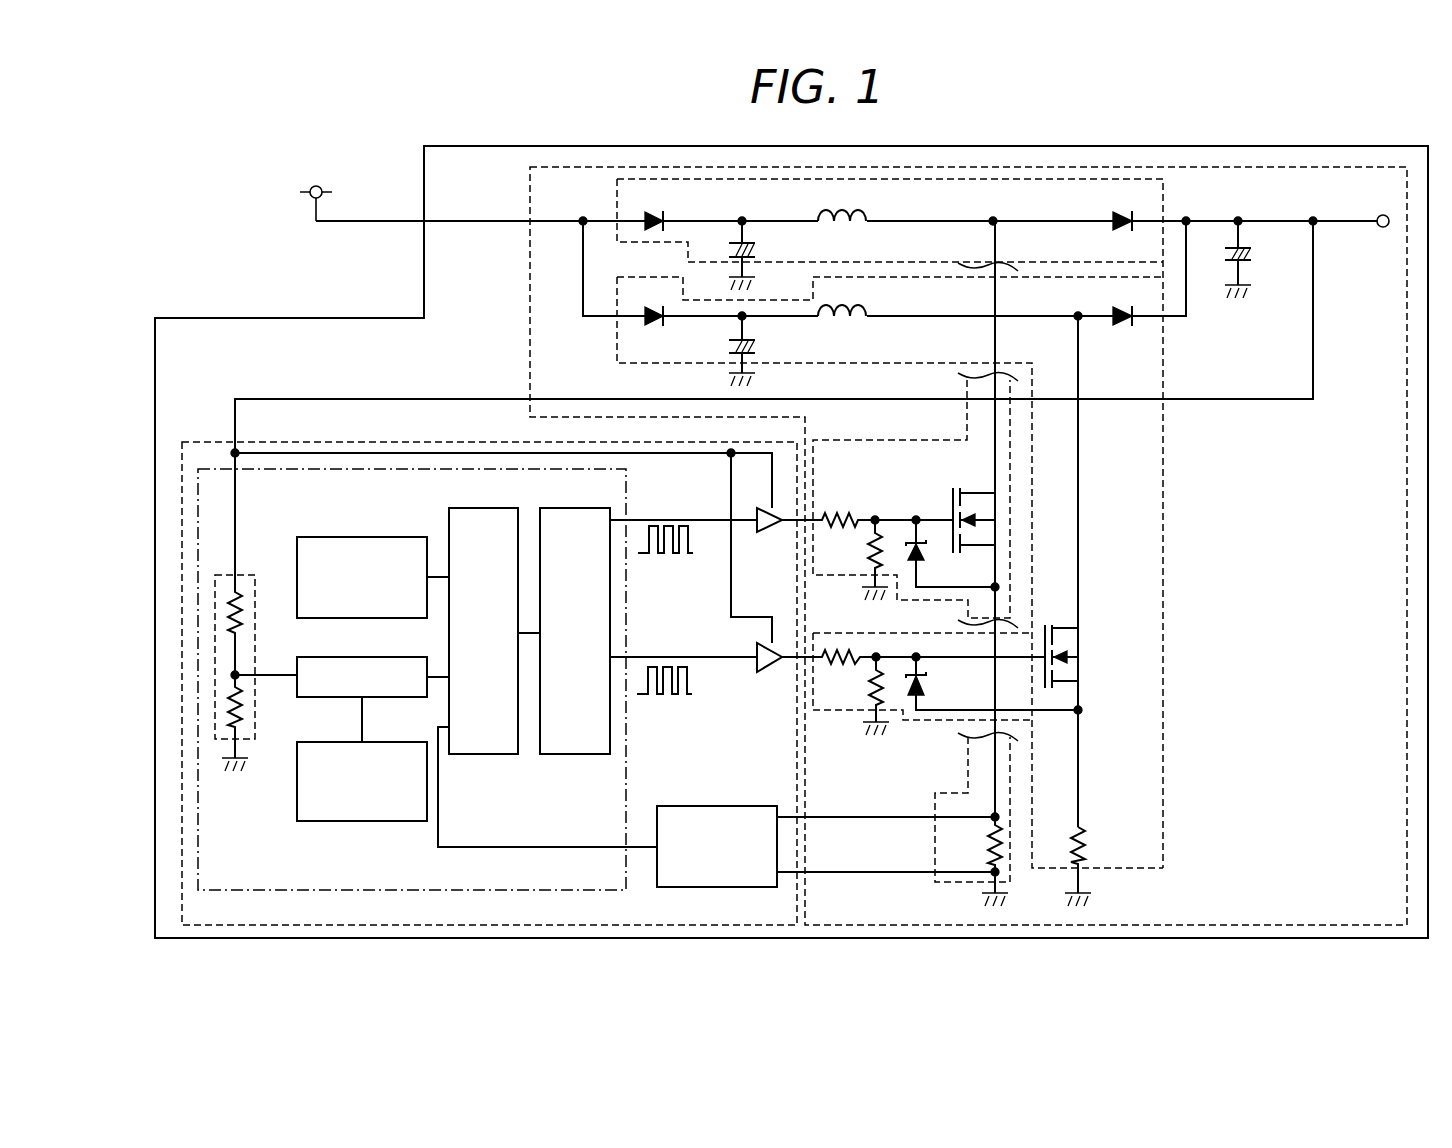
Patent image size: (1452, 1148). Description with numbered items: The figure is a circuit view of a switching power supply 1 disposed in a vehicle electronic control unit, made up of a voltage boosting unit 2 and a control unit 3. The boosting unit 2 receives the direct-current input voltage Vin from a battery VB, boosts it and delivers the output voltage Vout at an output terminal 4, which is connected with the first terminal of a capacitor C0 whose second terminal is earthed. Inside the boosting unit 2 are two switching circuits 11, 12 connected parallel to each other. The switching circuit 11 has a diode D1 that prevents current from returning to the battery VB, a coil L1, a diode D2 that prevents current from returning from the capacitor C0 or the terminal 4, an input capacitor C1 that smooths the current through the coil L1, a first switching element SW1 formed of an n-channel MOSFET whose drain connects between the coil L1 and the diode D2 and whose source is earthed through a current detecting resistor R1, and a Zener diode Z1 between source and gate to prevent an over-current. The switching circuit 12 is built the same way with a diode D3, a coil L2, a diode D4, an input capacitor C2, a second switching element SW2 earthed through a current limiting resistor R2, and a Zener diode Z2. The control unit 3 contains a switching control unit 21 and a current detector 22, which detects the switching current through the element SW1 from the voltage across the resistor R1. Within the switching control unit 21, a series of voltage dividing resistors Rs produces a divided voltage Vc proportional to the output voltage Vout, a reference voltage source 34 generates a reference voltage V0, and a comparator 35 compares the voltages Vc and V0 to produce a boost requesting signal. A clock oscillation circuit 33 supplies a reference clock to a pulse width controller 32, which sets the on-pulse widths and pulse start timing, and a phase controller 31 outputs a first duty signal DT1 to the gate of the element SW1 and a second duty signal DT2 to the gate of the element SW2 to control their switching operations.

The switching power supply 1 is at (1200, 143).
The voltage boosting unit 2 is at (528, 311).
The control unit 3 is at (210, 440).
The output terminal 4 is at (1378, 214).
The switching circuit 11 is at (879, 438).
The switching circuit 12 is at (1168, 636).
The switching control unit 21 is at (630, 775).
The current detector 22 is at (750, 806).
The phase controller 31 is at (580, 755).
The pulse width controller 32 is at (485, 755).
The clock oscillation circuit 33 is at (381, 537).
The reference voltage source 34 is at (322, 822).
The comparator 35 is at (348, 657).
The diode D1 is at (668, 212).
The diode D2 is at (1118, 208).
The diode D3 is at (665, 326).
The diode D4 is at (1118, 307).
The capacitor C0 is at (1252, 252).
The input capacitor C1 is at (758, 252).
The input capacitor C2 is at (758, 349).
The coil L1 is at (866, 213).
The coil L2 is at (866, 311).
The first switching element SW1 is at (951, 498).
The second switching element SW2 is at (1046, 625).
The Zener diode Z1 is at (927, 557).
The Zener diode Z2 is at (927, 682).
The current detecting resistor R1 is at (990, 845).
The current limiting resistor R2 is at (1090, 838).
The voltage dividing resistors Rs is at (249, 575).
The battery VB is at (312, 187).
The input voltage Vin is at (480, 209).
The output voltage Vout is at (800, 337).
The divided voltage Vc is at (266, 665).
The reference voltage V0 is at (346, 719).
The first duty signal DT1 is at (683, 552).
The second duty signal DT2 is at (683, 692).